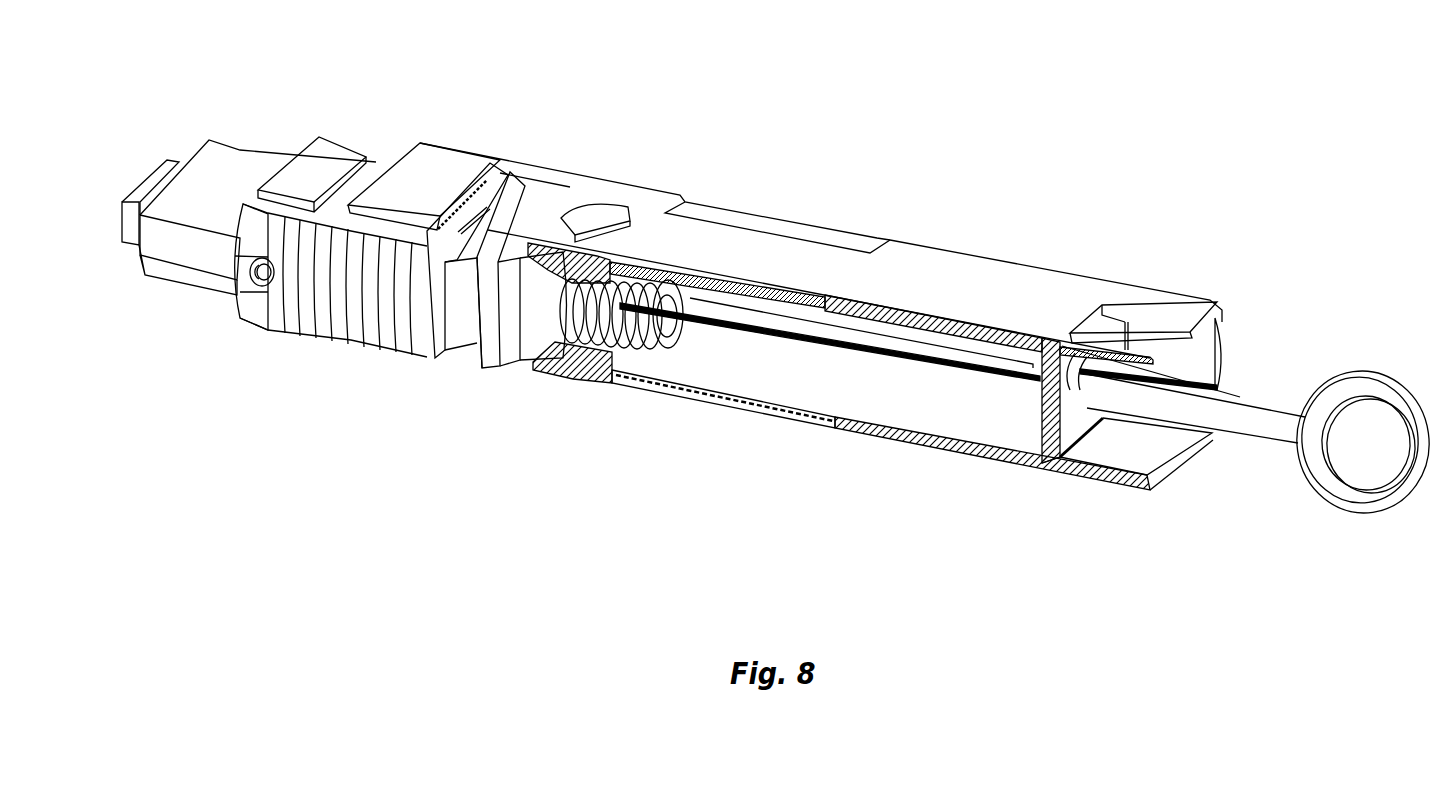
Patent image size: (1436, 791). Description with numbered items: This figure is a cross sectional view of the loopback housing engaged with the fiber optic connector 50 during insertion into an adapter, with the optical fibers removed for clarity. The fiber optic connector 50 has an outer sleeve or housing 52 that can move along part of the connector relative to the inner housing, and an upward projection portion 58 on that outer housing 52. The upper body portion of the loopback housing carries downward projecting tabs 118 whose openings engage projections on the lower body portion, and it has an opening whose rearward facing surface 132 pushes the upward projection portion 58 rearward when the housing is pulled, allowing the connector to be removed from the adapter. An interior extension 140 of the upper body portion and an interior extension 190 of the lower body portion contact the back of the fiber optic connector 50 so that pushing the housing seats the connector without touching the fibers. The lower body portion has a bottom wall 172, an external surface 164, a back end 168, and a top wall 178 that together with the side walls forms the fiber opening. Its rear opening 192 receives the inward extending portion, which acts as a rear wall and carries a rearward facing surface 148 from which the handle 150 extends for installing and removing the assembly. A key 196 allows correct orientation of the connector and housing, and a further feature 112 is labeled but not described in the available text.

The fiber optic connector 50 is at (274, 215).
The outer sleeve or housing 52 is at (312, 136).
The downward projecting tabs 118 is at (424, 149).
The rearward facing surface 132 is at (467, 220).
The upward projection portion 58 is at (522, 220).
The key 196 is at (595, 176).
The interior extension 140 is at (594, 198).
The interior extension 190 is at (572, 394).
The bottom wall 172 is at (881, 441).
The top wall 178 is at (925, 387).
The external surface 164 is at (1060, 440).
The rear opening 192 is at (1060, 506).
The rearward facing surface 148 is at (1155, 454).
The back end 168 is at (1176, 412).
The handle 150 is at (1261, 422).
The clip 112 is at (1149, 307).